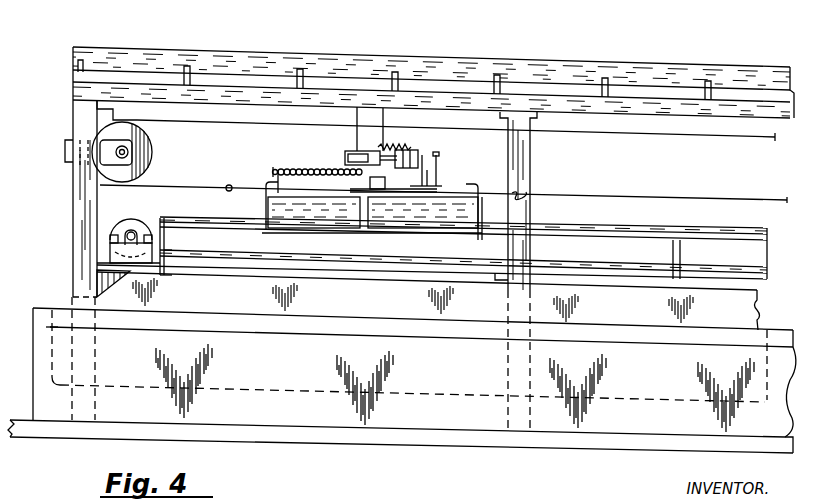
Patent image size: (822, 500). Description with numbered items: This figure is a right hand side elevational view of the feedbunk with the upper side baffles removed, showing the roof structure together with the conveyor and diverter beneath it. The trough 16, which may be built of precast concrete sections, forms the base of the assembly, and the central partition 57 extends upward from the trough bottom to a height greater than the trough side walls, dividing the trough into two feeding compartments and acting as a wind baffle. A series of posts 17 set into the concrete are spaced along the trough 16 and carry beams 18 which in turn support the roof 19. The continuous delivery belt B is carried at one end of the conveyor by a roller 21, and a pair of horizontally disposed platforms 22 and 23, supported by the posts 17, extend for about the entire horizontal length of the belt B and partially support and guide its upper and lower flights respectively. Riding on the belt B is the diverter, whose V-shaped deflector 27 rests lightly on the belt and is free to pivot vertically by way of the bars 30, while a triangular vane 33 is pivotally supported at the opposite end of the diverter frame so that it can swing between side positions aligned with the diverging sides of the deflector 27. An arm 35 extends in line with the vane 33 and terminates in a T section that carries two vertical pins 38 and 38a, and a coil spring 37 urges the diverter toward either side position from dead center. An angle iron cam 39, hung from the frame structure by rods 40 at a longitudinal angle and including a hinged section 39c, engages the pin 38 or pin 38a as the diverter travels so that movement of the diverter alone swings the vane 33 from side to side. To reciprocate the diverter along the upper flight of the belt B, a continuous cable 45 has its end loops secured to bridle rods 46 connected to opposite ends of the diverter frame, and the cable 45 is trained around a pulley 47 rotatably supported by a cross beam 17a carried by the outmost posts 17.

The trough 16 is at (283, 388).
The posts 17 is at (73, 183).
The cross beam 17a is at (65, 153).
The beams 18 is at (543, 100).
The roof 19 is at (372, 48).
The roller 21 is at (131, 216).
The platform 22 is at (660, 240).
The platform 23 is at (627, 280).
The V-shaped deflector 27 is at (340, 222).
The bars 30 is at (265, 200).
The vane 33 is at (445, 223).
The arm 35 is at (406, 189).
The coil spring 37 is at (292, 169).
The vertical pin 38 is at (440, 172).
The vertical pin 38a is at (440, 160).
The angle iron cam 39 is at (350, 153).
The hinged section 39c is at (418, 156).
The rods 40 is at (385, 114).
The cable 45 is at (206, 184).
The bridle rods 46 is at (239, 185).
The pulley 47 is at (149, 144).
The partition 57 is at (758, 311).
The delivery belt B is at (584, 228).